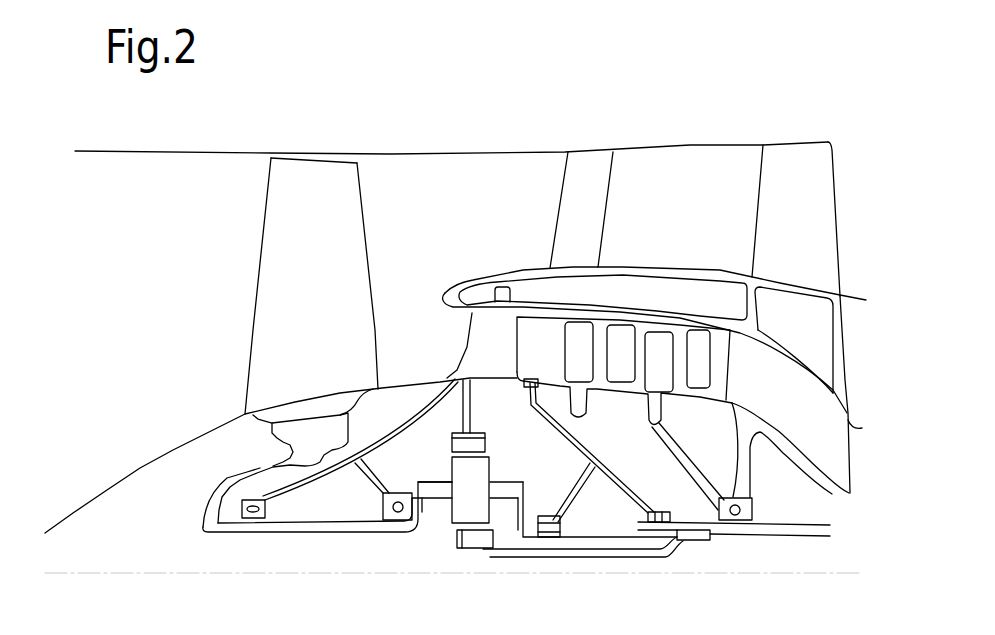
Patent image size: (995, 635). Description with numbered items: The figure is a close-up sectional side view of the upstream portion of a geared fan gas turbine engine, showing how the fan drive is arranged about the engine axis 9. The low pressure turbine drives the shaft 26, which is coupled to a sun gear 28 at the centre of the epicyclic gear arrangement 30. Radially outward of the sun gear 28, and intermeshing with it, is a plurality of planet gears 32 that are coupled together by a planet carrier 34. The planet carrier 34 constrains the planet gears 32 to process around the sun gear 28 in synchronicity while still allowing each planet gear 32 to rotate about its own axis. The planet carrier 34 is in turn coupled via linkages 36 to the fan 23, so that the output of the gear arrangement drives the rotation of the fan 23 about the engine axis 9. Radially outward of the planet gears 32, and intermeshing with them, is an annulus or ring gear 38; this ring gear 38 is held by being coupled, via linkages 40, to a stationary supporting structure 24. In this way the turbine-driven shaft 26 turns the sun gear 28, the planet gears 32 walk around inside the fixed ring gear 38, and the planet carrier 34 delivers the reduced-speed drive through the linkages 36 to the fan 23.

The engine axis 9 is at (212, 573).
The fan 23 is at (273, 330).
The stationary supporting structure 24 is at (480, 343).
The shaft 26 is at (717, 555).
The sun gear 28 is at (472, 545).
The epicyclic gear arrangement 30 is at (462, 508).
The planet gears 32 is at (447, 517).
The planet carrier 34 is at (517, 513).
The linkages 36 is at (430, 517).
The ring gear 38 is at (450, 445).
The linkages 40 is at (477, 405).